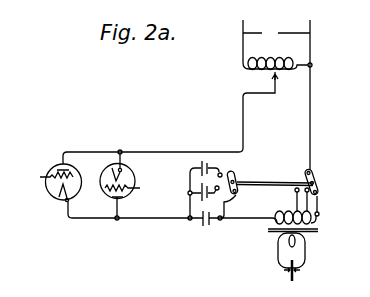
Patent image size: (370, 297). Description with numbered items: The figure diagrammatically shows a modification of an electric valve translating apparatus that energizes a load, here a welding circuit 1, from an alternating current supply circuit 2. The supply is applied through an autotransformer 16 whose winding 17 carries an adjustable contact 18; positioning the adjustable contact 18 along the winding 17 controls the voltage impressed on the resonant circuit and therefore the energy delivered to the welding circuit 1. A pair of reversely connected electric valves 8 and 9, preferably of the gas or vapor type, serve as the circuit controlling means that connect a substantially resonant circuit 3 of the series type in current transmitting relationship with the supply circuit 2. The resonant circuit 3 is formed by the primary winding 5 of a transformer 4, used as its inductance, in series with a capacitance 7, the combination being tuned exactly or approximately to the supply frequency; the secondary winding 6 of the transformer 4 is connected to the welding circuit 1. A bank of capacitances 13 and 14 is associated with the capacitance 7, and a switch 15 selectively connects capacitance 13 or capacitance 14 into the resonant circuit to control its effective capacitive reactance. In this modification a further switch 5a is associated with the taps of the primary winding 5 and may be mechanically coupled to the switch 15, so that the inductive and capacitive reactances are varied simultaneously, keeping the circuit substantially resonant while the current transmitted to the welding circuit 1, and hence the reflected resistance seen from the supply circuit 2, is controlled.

The welding circuit 1 is at (295, 272).
The alternating current supply circuit 2 is at (276, 33).
The resonant circuit 3 is at (282, 172).
The transformer 4 is at (268, 233).
The primary winding 5 is at (275, 212).
The switch 5a is at (318, 185).
The secondary winding 6 is at (306, 240).
The capacitance 7 is at (205, 228).
The electric valve 8 is at (75, 172).
The electric valve 9 is at (132, 172).
The capacitance 13 is at (200, 163).
The capacitance 14 is at (189, 191).
The switch 15 is at (236, 174).
The autotransformer 16 is at (288, 54).
The winding 17 is at (247, 62).
The adjustable contact 18 is at (277, 75).